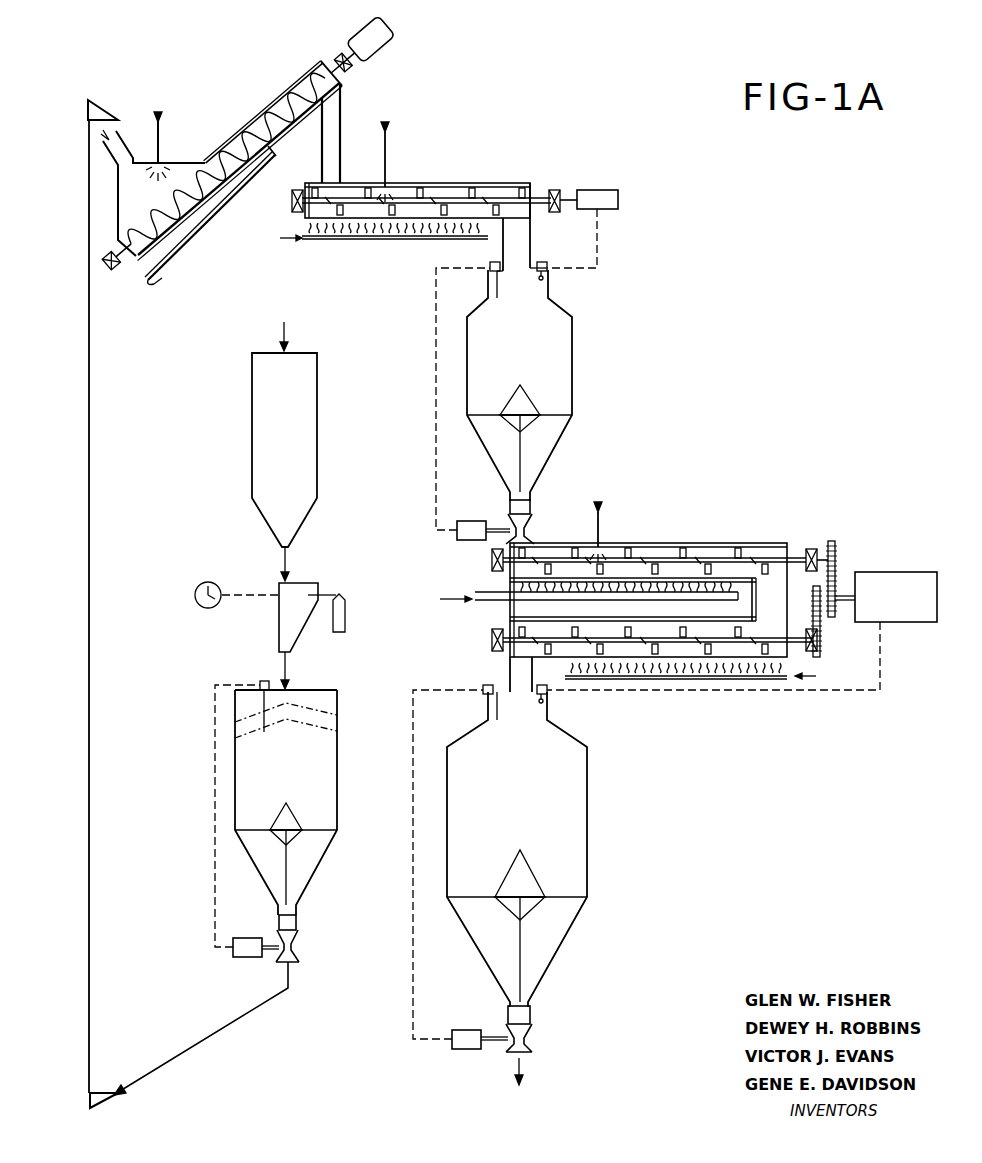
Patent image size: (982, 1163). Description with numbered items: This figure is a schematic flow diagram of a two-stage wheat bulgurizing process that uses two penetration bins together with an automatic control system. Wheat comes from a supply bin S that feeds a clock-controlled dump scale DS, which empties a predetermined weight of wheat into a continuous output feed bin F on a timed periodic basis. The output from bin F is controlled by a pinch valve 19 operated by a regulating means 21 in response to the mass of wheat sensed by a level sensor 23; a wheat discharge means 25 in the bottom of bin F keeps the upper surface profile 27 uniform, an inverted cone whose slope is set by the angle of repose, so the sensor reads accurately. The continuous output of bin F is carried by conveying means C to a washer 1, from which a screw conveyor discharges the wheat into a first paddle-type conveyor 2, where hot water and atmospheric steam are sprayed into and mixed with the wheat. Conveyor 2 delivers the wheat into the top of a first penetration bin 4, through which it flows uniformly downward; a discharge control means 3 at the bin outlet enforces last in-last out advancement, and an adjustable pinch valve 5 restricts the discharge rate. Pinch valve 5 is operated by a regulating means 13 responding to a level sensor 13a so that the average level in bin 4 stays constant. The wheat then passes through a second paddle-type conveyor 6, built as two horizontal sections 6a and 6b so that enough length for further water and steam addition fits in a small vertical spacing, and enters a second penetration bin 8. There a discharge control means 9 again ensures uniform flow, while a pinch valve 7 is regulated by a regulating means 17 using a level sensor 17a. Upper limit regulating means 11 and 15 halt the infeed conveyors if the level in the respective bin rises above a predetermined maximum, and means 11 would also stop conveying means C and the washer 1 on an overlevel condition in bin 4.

The washer 1 is at (250, 110).
The first paddle-type conveyor 2 is at (458, 178).
The wheat discharge control means 3 is at (527, 438).
The first penetration bin 4 is at (572, 344).
The pinch valve 5 is at (532, 528).
The second paddle-type conveyor 6 is at (621, 581).
The first section of conveyor 6 6a is at (733, 543).
The second section of conveyor 6 6b is at (488, 640).
The pinch valve 7 is at (534, 1040).
The second penetration bin 8 is at (587, 813).
The wheat discharge control means 9 is at (526, 921).
The upper limit regulating means 11 is at (586, 188).
The regulating means 13 is at (464, 548).
The level sensor 13a is at (490, 263).
The upper limit regulating means 15 is at (866, 567).
The regulating means 17 is at (466, 1056).
The level sensor 17a is at (486, 686).
The pinch valve 19 is at (298, 946).
The regulating means 21 is at (246, 958).
The level sensor 23 is at (262, 680).
The wheat discharge means 25 is at (288, 855).
The upper surface profile 27 is at (337, 712).
The supply bin S is at (318, 432).
The dump scale DS is at (302, 641).
The continuous output feed bin F is at (337, 770).
The conveying means C is at (94, 100).